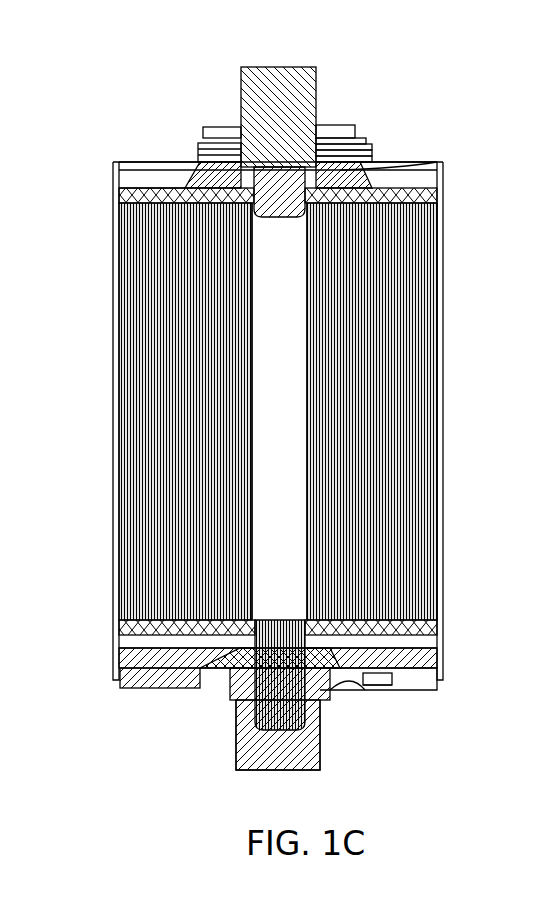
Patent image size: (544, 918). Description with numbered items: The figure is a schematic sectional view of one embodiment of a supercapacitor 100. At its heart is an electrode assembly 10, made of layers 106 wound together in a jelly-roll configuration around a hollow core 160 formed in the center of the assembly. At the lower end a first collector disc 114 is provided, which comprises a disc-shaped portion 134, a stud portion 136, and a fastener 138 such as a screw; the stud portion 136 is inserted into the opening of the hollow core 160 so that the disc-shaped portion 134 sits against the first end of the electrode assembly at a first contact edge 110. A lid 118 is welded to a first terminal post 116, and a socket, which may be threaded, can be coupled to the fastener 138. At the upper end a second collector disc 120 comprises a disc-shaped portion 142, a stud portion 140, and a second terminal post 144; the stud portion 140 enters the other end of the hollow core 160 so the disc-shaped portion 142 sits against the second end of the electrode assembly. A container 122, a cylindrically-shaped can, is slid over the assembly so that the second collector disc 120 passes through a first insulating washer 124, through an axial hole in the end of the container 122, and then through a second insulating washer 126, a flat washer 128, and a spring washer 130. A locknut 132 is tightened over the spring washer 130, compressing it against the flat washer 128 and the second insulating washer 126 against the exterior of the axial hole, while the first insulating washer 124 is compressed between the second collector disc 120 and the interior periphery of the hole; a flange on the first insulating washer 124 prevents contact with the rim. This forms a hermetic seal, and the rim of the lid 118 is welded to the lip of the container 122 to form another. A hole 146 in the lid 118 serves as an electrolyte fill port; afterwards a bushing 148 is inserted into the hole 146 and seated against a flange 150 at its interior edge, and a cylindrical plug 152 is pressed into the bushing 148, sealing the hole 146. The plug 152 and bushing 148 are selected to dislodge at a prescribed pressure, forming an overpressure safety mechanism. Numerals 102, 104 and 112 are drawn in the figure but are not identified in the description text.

The supercapacitor 100 is at (100, 92).
The bottom terminal 102 is at (325, 745).
The cap plate 104 is at (330, 118).
The layers 106 is at (432, 240).
The electrode assembly 10 is at (415, 283).
The first contact edge 110 is at (118, 624).
The top insulator 112 is at (118, 198).
The first collector disc 114 is at (203, 663).
The first terminal post 116 is at (237, 728).
The lid 118 is at (122, 684).
The second collector disc 120 is at (236, 70).
The container 122 is at (445, 468).
The first insulating washer 124 is at (360, 170).
The second insulating washer 126 is at (374, 158).
The flat washer 128 is at (368, 150).
The spring washer 130 is at (362, 141).
The locknut 132 is at (356, 131).
The disc-shaped portion 134 is at (430, 638).
The stud portion 136 is at (274, 620).
The fastener 138 is at (335, 700).
The stud portion 140 is at (272, 220).
The disc-shaped portion 142 is at (116, 166).
The second terminal post 144 is at (318, 80).
The hole 146 is at (387, 700).
The bushing 148 is at (400, 678).
The flange 150 is at (410, 660).
The plug 152 is at (400, 690).
The hollow core 160 is at (298, 334).